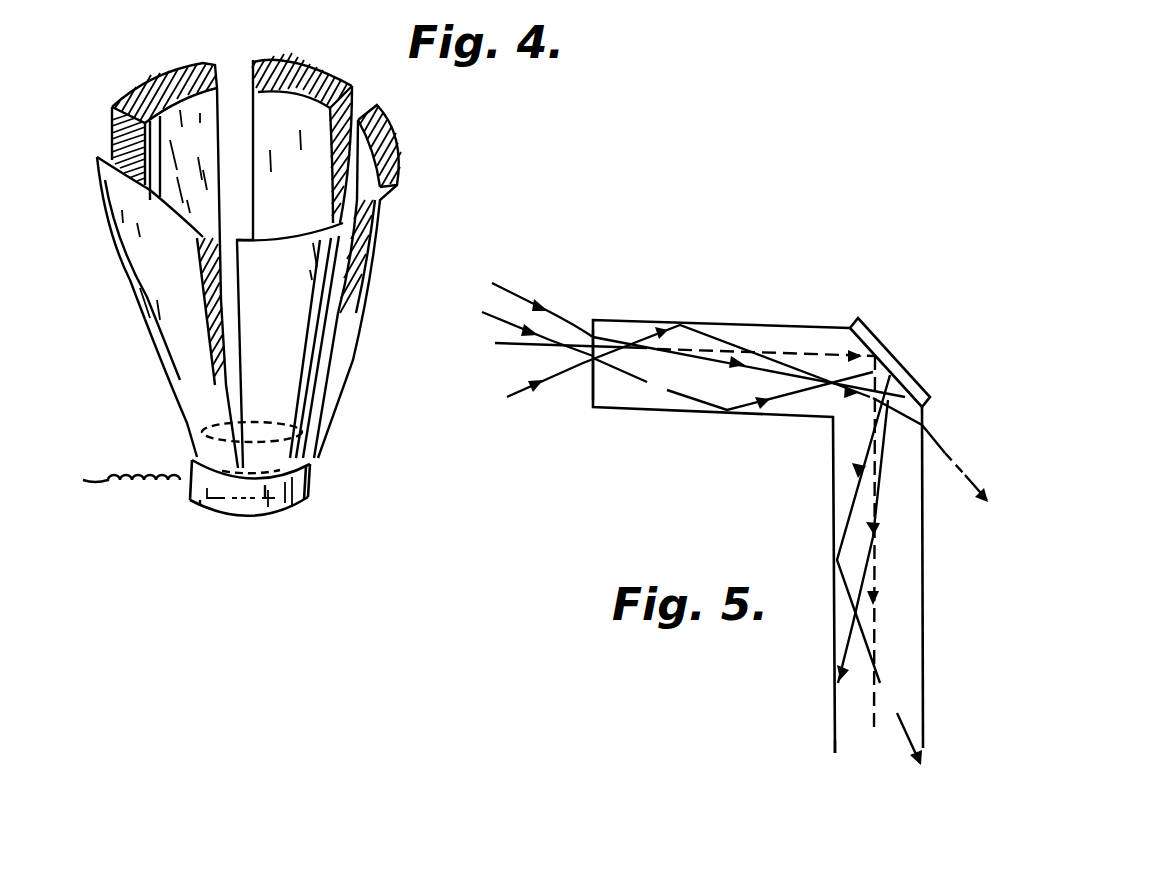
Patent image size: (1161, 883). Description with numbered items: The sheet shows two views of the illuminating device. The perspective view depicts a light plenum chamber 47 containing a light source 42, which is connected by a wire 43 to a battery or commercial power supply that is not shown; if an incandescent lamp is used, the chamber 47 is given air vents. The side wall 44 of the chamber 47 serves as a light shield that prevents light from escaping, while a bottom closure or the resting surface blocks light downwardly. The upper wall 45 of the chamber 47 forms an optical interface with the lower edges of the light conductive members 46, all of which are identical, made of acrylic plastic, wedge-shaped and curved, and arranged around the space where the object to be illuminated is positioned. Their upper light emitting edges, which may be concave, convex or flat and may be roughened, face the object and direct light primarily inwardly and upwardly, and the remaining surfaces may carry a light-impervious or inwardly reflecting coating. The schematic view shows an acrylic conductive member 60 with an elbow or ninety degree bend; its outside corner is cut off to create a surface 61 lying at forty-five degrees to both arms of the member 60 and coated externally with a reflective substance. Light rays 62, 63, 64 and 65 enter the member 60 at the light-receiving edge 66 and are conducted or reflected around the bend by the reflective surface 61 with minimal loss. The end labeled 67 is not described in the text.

In FIG. 4, the light source 42 is at (273, 500).
In FIG. 4, the wire 43 is at (138, 483).
In FIG. 4, the side wall 44 is at (315, 481).
In FIG. 4, the upper wall 45 is at (213, 448).
In FIG. 4, the light conductive members 46 is at (137, 92).
In FIG. 4, the light plenum chamber 47 is at (237, 511).
In FIG. 5, the acrylic conductive member 60 is at (795, 325).
In FIG. 5, the reflective surface 61 is at (893, 350).
In FIG. 5, the light ray 62 is at (522, 390).
In FIG. 5, the light ray 63 is at (510, 347).
In FIG. 5, the light ray 64 is at (503, 317).
In FIG. 5, the light ray 65 is at (513, 293).
In FIG. 5, the light-receiving edge 66 is at (597, 388).
In FIG. 5, the exit end 67 is at (853, 750).